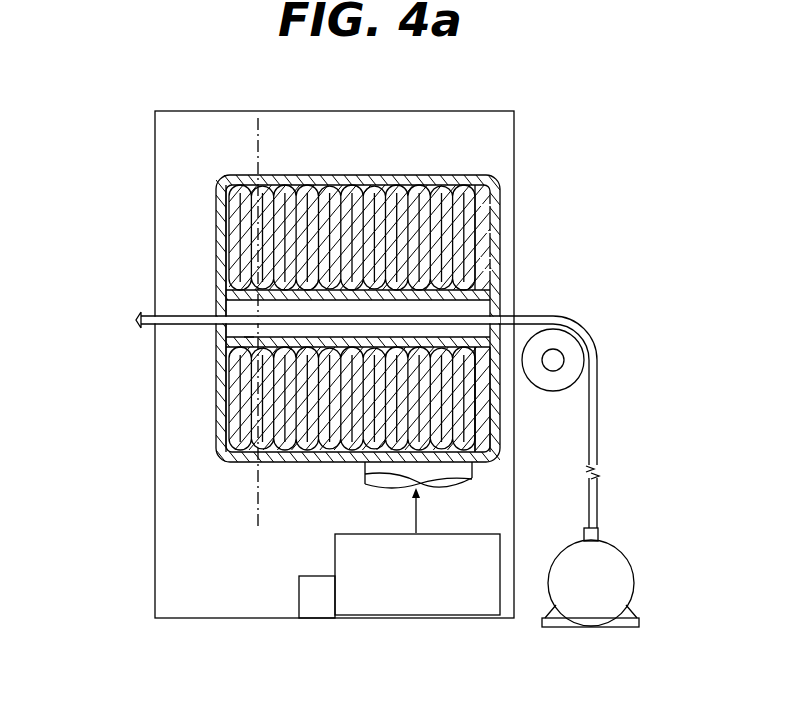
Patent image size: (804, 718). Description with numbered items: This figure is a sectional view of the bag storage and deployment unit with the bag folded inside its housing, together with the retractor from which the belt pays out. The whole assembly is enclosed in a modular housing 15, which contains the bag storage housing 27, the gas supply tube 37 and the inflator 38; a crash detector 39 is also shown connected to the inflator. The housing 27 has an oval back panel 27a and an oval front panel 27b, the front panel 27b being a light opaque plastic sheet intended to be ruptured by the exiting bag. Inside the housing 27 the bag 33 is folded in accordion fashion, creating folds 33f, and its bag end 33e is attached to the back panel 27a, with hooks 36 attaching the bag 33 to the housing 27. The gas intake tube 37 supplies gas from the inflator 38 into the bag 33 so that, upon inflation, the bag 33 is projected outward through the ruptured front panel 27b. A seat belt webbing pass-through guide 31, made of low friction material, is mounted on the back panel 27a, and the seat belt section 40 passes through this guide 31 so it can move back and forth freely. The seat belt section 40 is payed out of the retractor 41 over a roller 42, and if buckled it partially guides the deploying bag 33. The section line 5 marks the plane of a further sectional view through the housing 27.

The modular housing 15 is at (155, 163).
The section line 5- 5 is at (246, 130).
The housing 27 is at (454, 170).
The back panel 27a is at (493, 198).
The front panel 27b is at (216, 212).
The seat belt webbing pass-through guide 31 is at (248, 336).
The bag 33 is at (301, 359).
The bag end 33e is at (492, 417).
The folds 33f is at (415, 176).
The hooks 36 is at (490, 248).
The gas supply tube 37 is at (380, 474).
The inflator 38 is at (436, 604).
The crash detector 39 is at (312, 598).
The seat belt section 40 is at (186, 325).
The retractor 41 is at (604, 573).
The roller 42 is at (572, 343).